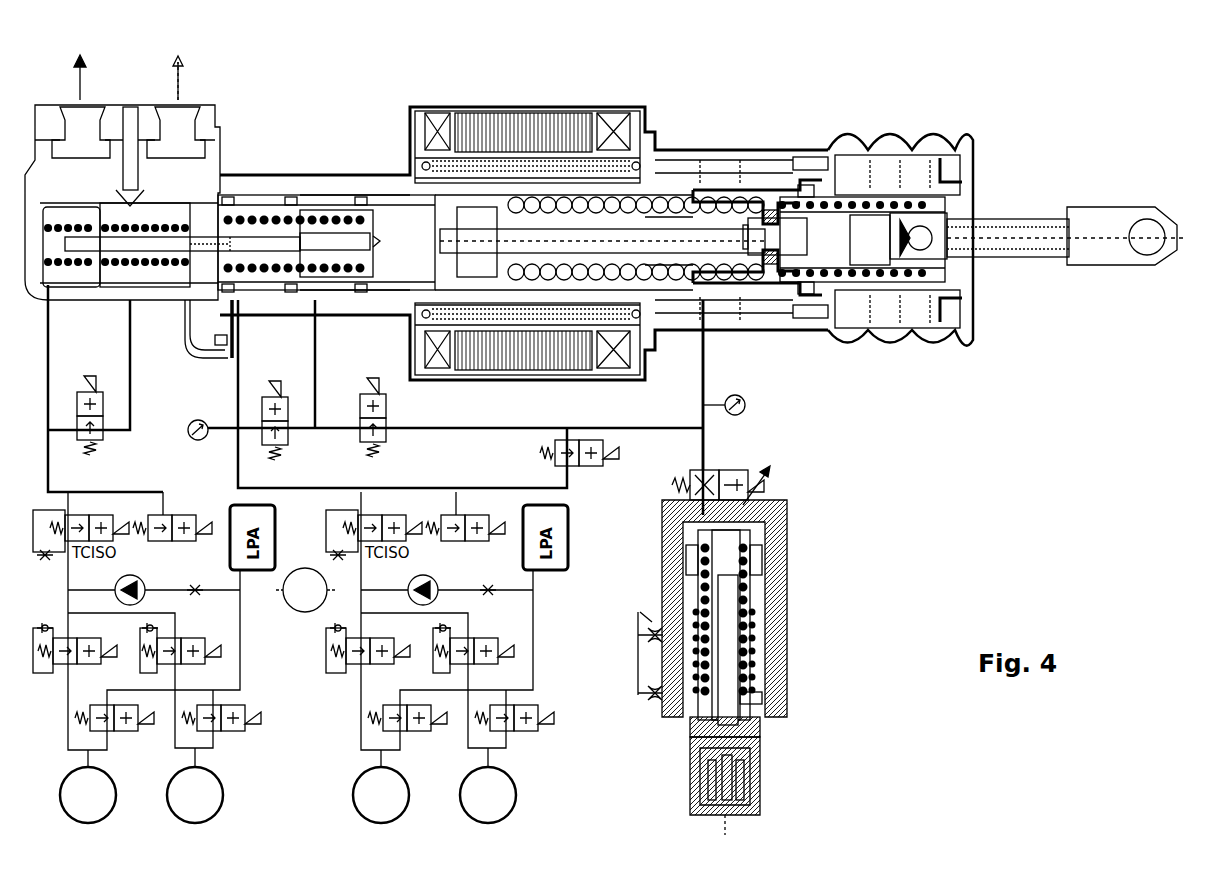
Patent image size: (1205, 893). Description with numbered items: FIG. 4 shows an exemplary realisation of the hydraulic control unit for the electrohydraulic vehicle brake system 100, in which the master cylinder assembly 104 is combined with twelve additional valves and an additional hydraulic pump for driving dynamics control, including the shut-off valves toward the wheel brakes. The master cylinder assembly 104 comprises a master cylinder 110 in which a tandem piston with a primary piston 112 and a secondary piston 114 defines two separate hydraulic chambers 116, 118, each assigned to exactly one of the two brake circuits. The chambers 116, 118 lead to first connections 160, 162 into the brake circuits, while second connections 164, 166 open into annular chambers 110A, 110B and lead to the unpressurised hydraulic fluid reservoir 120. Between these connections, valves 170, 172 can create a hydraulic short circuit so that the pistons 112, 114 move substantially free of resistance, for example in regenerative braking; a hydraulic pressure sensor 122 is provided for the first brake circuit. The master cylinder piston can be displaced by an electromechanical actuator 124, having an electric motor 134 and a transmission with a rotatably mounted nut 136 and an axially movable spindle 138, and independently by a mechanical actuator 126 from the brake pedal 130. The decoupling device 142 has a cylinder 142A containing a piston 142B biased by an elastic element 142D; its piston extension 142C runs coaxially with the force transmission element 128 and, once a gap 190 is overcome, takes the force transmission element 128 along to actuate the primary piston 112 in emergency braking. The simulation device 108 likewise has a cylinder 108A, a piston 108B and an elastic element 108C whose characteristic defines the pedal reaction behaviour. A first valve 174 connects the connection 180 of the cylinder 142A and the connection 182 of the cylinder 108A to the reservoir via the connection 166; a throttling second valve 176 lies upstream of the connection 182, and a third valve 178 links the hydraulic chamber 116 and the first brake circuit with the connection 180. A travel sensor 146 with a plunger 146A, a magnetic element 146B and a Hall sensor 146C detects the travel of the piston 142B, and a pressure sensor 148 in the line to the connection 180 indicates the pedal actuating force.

The vehicle brake system 100 is at (1040, 416).
The master cylinder assembly 104 is at (906, 471).
The simulation device 108 is at (788, 652).
The cylinder 108A is at (763, 668).
The piston 108B is at (758, 590).
The elastic element 108C is at (762, 698).
The master cylinder 110 is at (240, 202).
The annular chamber 110A is at (130, 202).
The annular chamber 110B is at (310, 195).
The primary piston 112 is at (427, 259).
The secondary piston 114 is at (187, 236).
The hydraulic chamber 116 is at (277, 278).
The hydraulic chamber 118 is at (88, 272).
The hydraulic fluid reservoir 120 is at (127, 66).
The hydraulic pressure sensor 122 is at (189, 427).
The electromechanical actuator 124 is at (524, 208).
The mechanical actuator 126 is at (1066, 199).
The force transmission element 128 is at (650, 235).
The brake pedal 130 is at (1093, 252).
The electric motor 134 is at (480, 130).
The nut 136 is at (570, 197).
The spindle 138 is at (513, 215).
The decoupling device 142 is at (931, 262).
The cylinder 142A is at (801, 294).
The piston 142B is at (837, 283).
The piston extension 142C is at (857, 242).
The elastic element 142D is at (913, 275).
The travel sensor 146 is at (824, 191).
The plunger 146A is at (912, 178).
The magnetic element 146B is at (818, 163).
The Hall sensor 146C is at (760, 168).
The pressure sensor 148 is at (740, 396).
The first connection 160 is at (48, 303).
The first connection 162 is at (236, 332).
The second connection 164 is at (128, 297).
The second connection 166 is at (317, 318).
The valve 170 is at (104, 443).
The valve 172 is at (290, 400).
The first valve 174 is at (380, 422).
The second valve 176 is at (736, 448).
The third valve 178 is at (550, 468).
The connection 180 is at (702, 305).
The connection 182 is at (705, 500).
The gap 190 is at (748, 233).